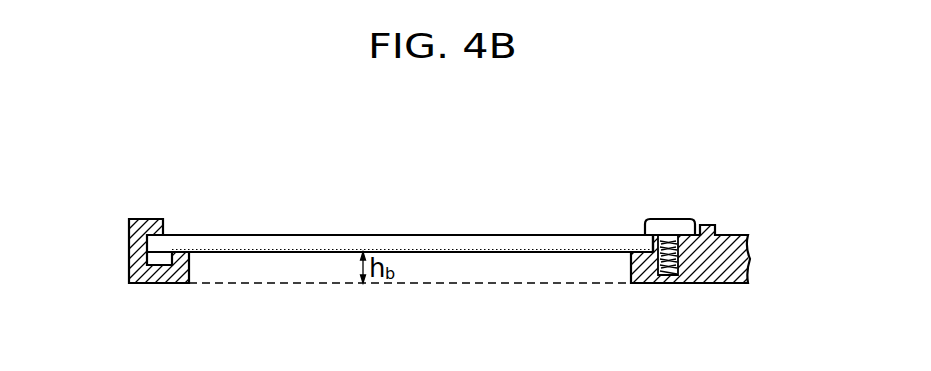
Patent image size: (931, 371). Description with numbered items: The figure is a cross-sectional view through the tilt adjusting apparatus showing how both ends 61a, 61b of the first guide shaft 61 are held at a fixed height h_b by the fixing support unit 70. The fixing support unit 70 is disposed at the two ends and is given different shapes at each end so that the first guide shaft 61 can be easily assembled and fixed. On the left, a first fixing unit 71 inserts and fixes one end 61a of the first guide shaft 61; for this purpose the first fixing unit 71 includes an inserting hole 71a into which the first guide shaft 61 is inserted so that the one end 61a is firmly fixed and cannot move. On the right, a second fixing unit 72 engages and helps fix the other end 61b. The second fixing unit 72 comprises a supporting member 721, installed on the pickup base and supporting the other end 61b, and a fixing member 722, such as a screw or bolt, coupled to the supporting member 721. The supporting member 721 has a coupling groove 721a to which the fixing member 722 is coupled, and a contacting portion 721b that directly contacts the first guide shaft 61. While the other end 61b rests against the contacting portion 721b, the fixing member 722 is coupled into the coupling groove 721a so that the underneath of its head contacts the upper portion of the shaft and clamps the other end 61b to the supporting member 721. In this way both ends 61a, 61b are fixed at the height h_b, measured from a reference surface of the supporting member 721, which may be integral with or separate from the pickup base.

The fixing support unit 70 is at (425, 231).
The first fixing unit 71 is at (149, 228).
The inserting hole 71a is at (155, 258).
The second fixing unit 72 is at (687, 231).
The supporting member 721 is at (687, 284).
The coupling groove 721a is at (687, 283).
The contacting portion 721b is at (635, 283).
The fixing member 722 is at (709, 216).
The first guide shaft 61 is at (400, 197).
The one end of the first guide shaft 61a is at (182, 243).
The other end of the first guide shaft 61b is at (651, 243).